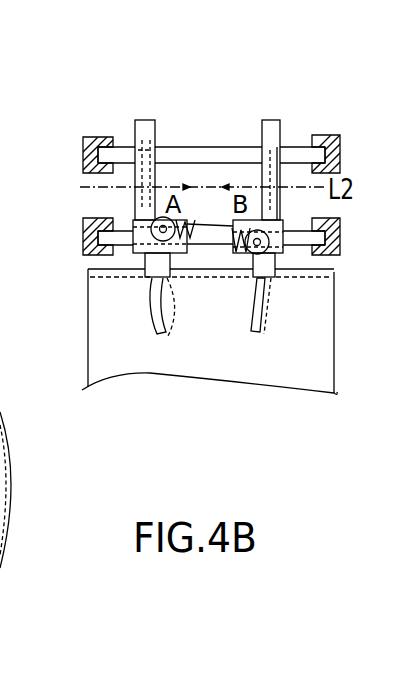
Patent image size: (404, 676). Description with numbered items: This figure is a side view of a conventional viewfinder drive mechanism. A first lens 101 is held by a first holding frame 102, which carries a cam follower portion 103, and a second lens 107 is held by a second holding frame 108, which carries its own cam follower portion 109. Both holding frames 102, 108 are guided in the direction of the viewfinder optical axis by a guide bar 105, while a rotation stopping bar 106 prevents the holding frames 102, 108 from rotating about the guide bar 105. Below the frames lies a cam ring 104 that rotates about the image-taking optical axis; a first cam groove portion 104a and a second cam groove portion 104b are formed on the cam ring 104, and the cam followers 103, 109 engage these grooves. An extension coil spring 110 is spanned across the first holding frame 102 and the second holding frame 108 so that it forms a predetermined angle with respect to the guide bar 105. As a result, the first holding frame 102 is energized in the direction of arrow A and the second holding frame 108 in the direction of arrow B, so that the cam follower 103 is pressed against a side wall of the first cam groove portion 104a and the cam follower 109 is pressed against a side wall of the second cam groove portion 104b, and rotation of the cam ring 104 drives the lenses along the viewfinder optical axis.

The first lens 101 is at (148, 141).
The first holding frame 102 is at (145, 120).
The cam follower portion 103 is at (146, 257).
The cam ring 104 is at (87, 318).
The first cam groove portion 104a is at (159, 336).
The second cam groove portion 104b is at (254, 334).
The guide bar 105 is at (125, 236).
The rotation stopping bar 106 is at (124, 146).
The second lens 107 is at (280, 140).
The second holding frame 108 is at (272, 120).
The cam follower portion 109 is at (276, 262).
The extension coil spring 110 is at (215, 248).